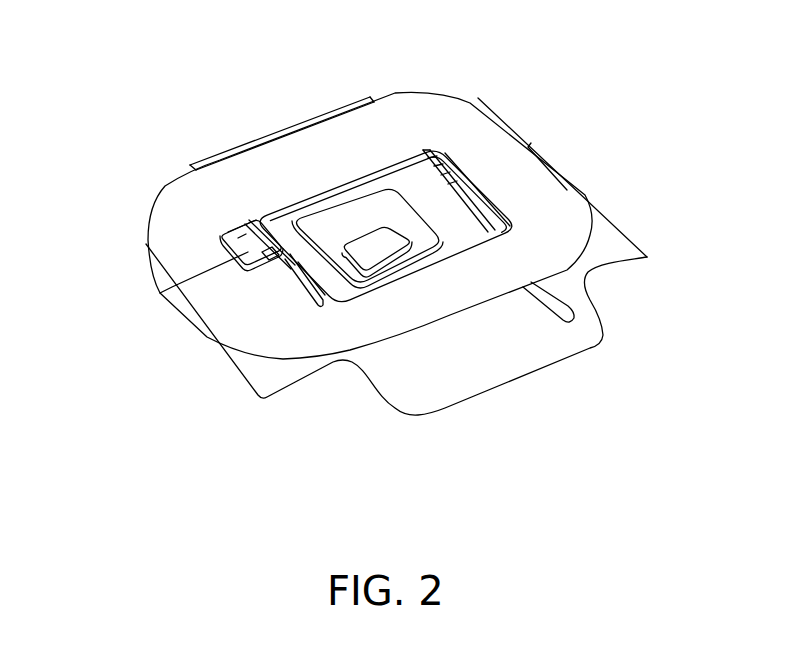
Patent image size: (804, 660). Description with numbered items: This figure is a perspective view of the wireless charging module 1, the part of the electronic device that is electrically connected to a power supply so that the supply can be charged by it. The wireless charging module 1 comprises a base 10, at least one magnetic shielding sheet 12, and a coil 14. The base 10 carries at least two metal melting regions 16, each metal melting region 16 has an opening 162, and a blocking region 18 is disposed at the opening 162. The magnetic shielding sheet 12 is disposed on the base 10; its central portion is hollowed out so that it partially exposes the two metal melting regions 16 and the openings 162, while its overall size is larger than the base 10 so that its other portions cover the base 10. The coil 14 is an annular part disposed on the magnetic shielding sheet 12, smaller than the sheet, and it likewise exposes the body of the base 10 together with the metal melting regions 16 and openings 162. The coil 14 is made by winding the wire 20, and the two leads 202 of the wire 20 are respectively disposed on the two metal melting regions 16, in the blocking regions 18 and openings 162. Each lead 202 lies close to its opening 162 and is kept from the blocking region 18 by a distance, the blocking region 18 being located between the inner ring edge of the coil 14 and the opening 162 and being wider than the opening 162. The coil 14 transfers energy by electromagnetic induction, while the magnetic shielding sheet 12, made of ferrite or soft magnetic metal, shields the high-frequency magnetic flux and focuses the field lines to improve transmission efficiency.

The wireless charging module 1 is at (123, 117).
The base 10 is at (432, 216).
The magnetic shielding sheet 12 is at (523, 358).
The coil 14 is at (462, 122).
The metal melting region 16 is at (222, 246).
The opening 162 is at (226, 227).
The blocking region 18 is at (243, 236).
The wire 20 is at (298, 272).
The lead 202 is at (268, 258).